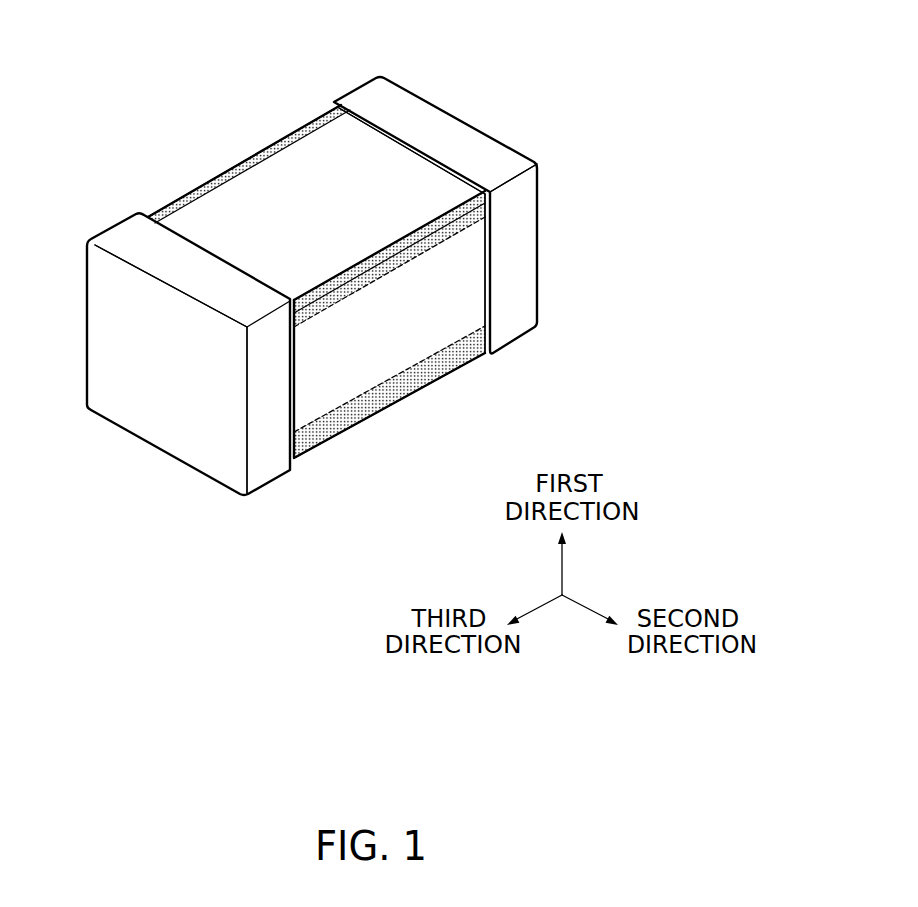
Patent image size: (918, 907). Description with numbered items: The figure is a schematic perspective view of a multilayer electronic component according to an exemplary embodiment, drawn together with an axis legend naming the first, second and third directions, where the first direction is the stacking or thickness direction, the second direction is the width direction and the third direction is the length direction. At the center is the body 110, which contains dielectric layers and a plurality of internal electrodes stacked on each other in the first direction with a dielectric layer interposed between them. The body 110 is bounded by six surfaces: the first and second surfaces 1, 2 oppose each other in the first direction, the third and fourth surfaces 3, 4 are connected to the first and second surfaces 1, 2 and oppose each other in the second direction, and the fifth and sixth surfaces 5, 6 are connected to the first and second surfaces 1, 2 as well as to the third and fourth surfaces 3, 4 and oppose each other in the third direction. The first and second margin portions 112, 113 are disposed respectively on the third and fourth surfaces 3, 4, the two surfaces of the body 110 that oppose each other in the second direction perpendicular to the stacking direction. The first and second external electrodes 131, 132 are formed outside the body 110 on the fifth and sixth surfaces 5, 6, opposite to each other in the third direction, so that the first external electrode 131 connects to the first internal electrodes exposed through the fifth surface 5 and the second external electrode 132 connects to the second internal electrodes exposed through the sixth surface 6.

The first surface 1 is at (345, 142).
The second surface 2 is at (404, 356).
The third surface 3 is at (190, 222).
The fourth surface 4 is at (468, 263).
The fifth surface 5 is at (148, 408).
The sixth surface 6 is at (476, 151).
The body 110 is at (298, 173).
The first margin portion 112 is at (235, 168).
The second margin portion 113 is at (333, 397).
The first external electrode 131 is at (120, 240).
The second external electrode 132 is at (373, 95).